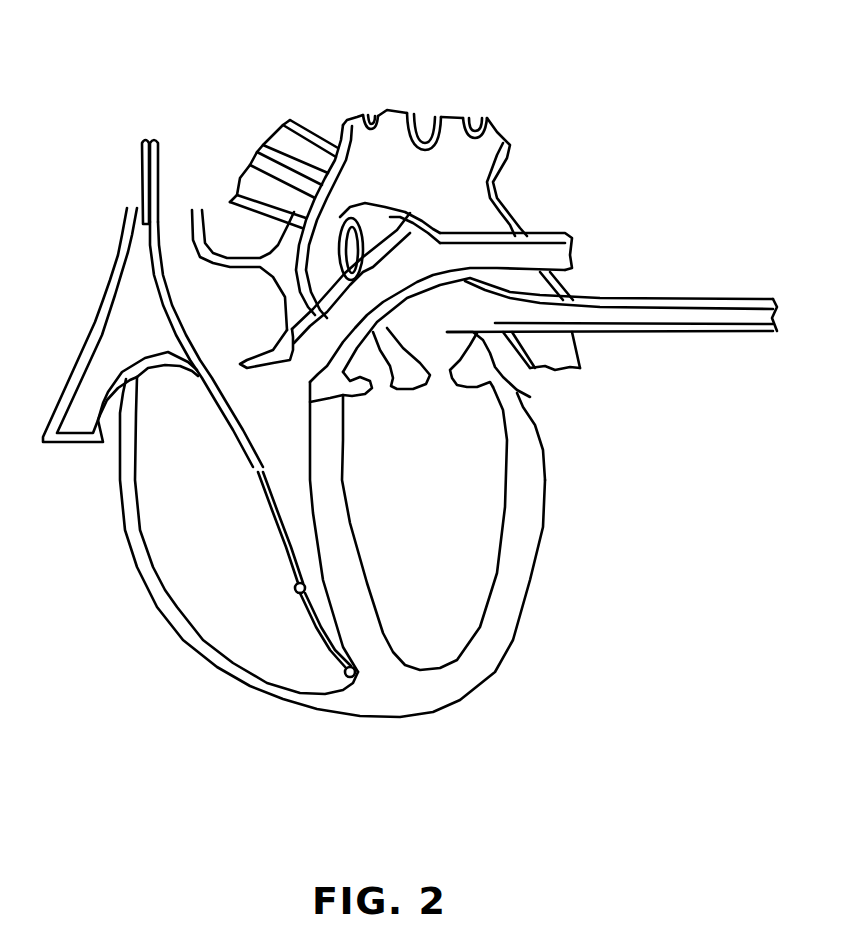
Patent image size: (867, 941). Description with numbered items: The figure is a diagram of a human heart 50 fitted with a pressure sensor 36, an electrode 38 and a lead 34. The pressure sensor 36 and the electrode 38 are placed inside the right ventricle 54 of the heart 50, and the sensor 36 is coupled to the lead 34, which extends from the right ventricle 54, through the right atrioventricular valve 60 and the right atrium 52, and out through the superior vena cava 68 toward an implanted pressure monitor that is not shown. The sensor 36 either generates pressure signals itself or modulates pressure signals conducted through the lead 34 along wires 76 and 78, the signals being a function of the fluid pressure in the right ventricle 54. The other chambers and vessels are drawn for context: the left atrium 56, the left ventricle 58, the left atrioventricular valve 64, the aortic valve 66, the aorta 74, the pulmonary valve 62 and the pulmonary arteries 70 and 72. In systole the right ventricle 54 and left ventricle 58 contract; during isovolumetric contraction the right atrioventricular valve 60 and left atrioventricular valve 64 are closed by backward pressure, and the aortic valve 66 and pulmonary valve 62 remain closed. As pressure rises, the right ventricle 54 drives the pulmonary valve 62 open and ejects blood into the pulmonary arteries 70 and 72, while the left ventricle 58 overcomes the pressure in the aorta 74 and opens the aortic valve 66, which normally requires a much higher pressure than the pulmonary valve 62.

The lead 34 is at (233, 430).
The pressure sensor 36 is at (294, 588).
The electrode 38 is at (345, 672).
The heart 50 is at (183, 668).
The right atrium 52 is at (120, 327).
The right ventricle 54 is at (190, 533).
The left atrium 56 is at (490, 330).
The left ventricle 58 is at (480, 547).
The right atrioventricular valve 60 is at (216, 362).
The pulmonary valve 62 is at (285, 374).
The left atrioventricular valve 64 is at (438, 386).
The aortic valve 66 is at (375, 397).
The superior vena cava 68 is at (177, 241).
The pulmonary artery 70 is at (308, 128).
The pulmonary artery 72 is at (556, 232).
The aorta 74 is at (406, 197).
The wire 76 is at (158, 138).
The wire 78 is at (145, 138).